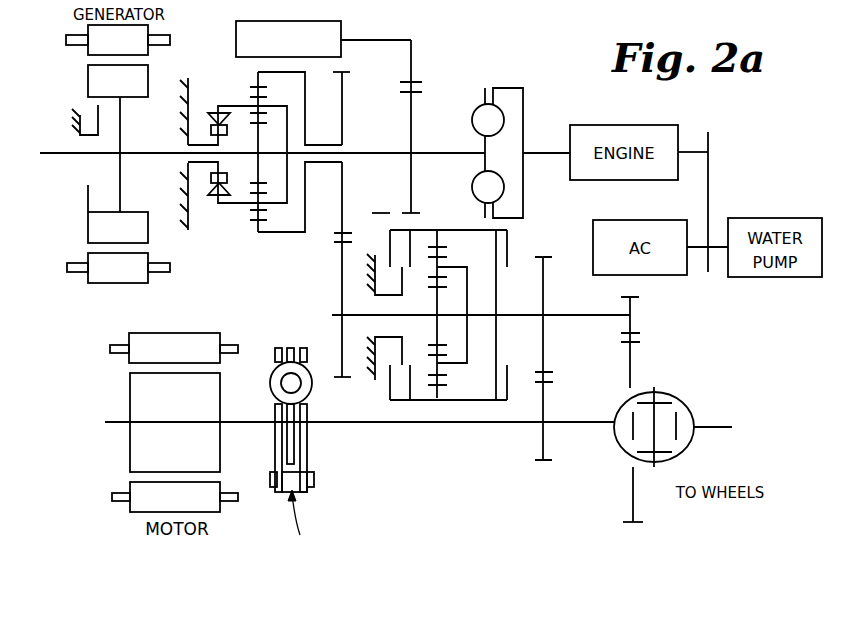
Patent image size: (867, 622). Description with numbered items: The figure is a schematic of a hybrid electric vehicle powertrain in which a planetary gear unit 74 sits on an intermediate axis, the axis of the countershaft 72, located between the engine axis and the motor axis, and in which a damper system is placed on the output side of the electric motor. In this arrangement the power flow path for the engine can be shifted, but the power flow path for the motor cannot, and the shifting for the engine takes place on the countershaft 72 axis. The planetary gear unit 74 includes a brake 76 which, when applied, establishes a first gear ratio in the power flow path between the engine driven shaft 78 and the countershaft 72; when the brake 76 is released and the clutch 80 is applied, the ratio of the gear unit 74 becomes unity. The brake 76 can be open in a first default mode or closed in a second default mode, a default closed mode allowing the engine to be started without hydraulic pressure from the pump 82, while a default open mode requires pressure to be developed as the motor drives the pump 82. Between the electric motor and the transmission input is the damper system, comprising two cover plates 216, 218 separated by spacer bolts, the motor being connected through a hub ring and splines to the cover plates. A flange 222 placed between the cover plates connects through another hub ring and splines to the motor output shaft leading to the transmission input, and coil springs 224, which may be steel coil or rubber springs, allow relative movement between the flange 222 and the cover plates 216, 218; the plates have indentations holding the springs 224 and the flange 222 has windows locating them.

The countershaft 72 is at (520, 315).
The planetary gear unit 74 is at (437, 230).
The brake 76 is at (403, 251).
The engine driven shaft 78 is at (383, 150).
The clutch 80 is at (496, 352).
The pump 82 is at (236, 40).
The cover plate 216 is at (309, 464).
The cover plate 218 is at (273, 464).
The flange 222 is at (290, 463).
The coil springs 224 is at (270, 382).